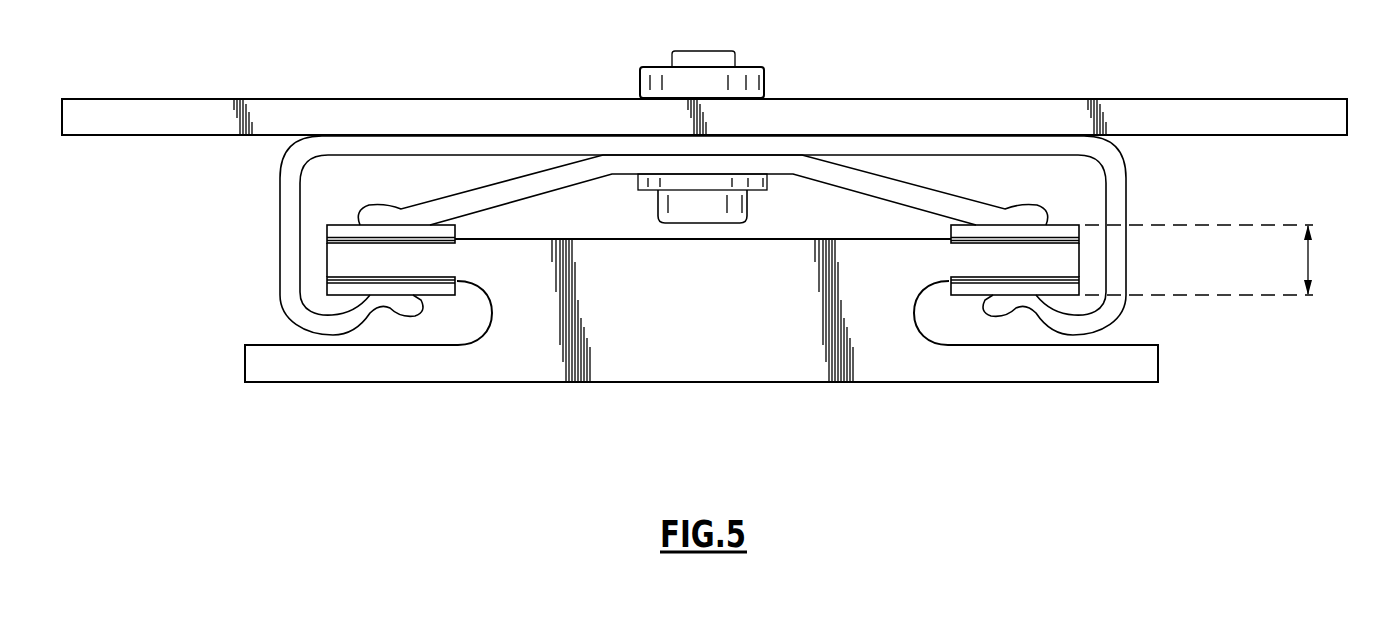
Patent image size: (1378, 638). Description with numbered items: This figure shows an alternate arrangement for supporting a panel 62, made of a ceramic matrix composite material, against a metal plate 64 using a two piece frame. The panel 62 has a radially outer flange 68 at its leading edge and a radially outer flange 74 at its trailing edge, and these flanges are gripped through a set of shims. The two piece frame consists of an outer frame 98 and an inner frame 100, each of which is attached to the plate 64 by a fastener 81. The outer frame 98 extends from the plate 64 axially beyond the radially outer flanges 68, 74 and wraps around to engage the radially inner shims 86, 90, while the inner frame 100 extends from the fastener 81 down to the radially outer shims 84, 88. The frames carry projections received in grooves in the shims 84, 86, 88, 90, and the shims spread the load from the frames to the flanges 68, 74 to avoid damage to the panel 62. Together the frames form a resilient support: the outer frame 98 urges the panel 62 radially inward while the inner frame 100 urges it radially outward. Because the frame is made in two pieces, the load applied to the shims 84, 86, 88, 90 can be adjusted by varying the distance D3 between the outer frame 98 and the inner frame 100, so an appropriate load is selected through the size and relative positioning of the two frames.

The panel 62 is at (541, 392).
The plate 64 is at (356, 97).
The radially outer flange 68 is at (328, 262).
The radially outer flange 74 is at (1078, 263).
The fastener 81 is at (735, 62).
The shim 84 is at (328, 238).
The shim 86 is at (330, 288).
The shim 88 is at (1082, 232).
The shim 90 is at (1082, 287).
The outer frame 98 is at (1130, 189).
The inner frame 100 is at (948, 190).
The distance D3 is at (1308, 258).